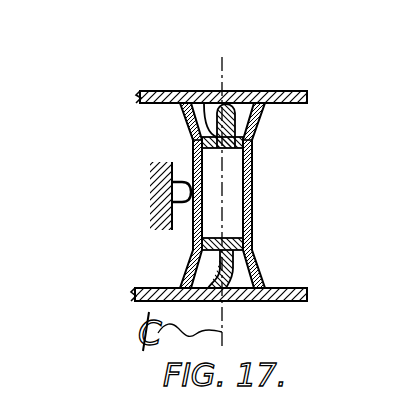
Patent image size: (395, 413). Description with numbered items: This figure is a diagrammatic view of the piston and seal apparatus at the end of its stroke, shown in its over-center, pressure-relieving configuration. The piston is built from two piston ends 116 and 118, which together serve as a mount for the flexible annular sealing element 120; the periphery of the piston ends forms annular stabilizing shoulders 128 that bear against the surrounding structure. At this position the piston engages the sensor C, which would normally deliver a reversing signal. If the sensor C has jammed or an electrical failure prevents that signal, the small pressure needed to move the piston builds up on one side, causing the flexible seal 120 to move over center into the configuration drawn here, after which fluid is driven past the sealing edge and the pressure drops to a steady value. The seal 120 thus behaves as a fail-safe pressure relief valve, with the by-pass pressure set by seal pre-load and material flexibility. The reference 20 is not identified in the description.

The fastener assembly 20 is at (244, 84).
The annular stabilizing shoulder 128 is at (273, 91).
The annular sealing element 120 is at (261, 110).
The piston end 118 is at (254, 213).
The piston end 116 is at (186, 238).
The sensor C is at (186, 192).